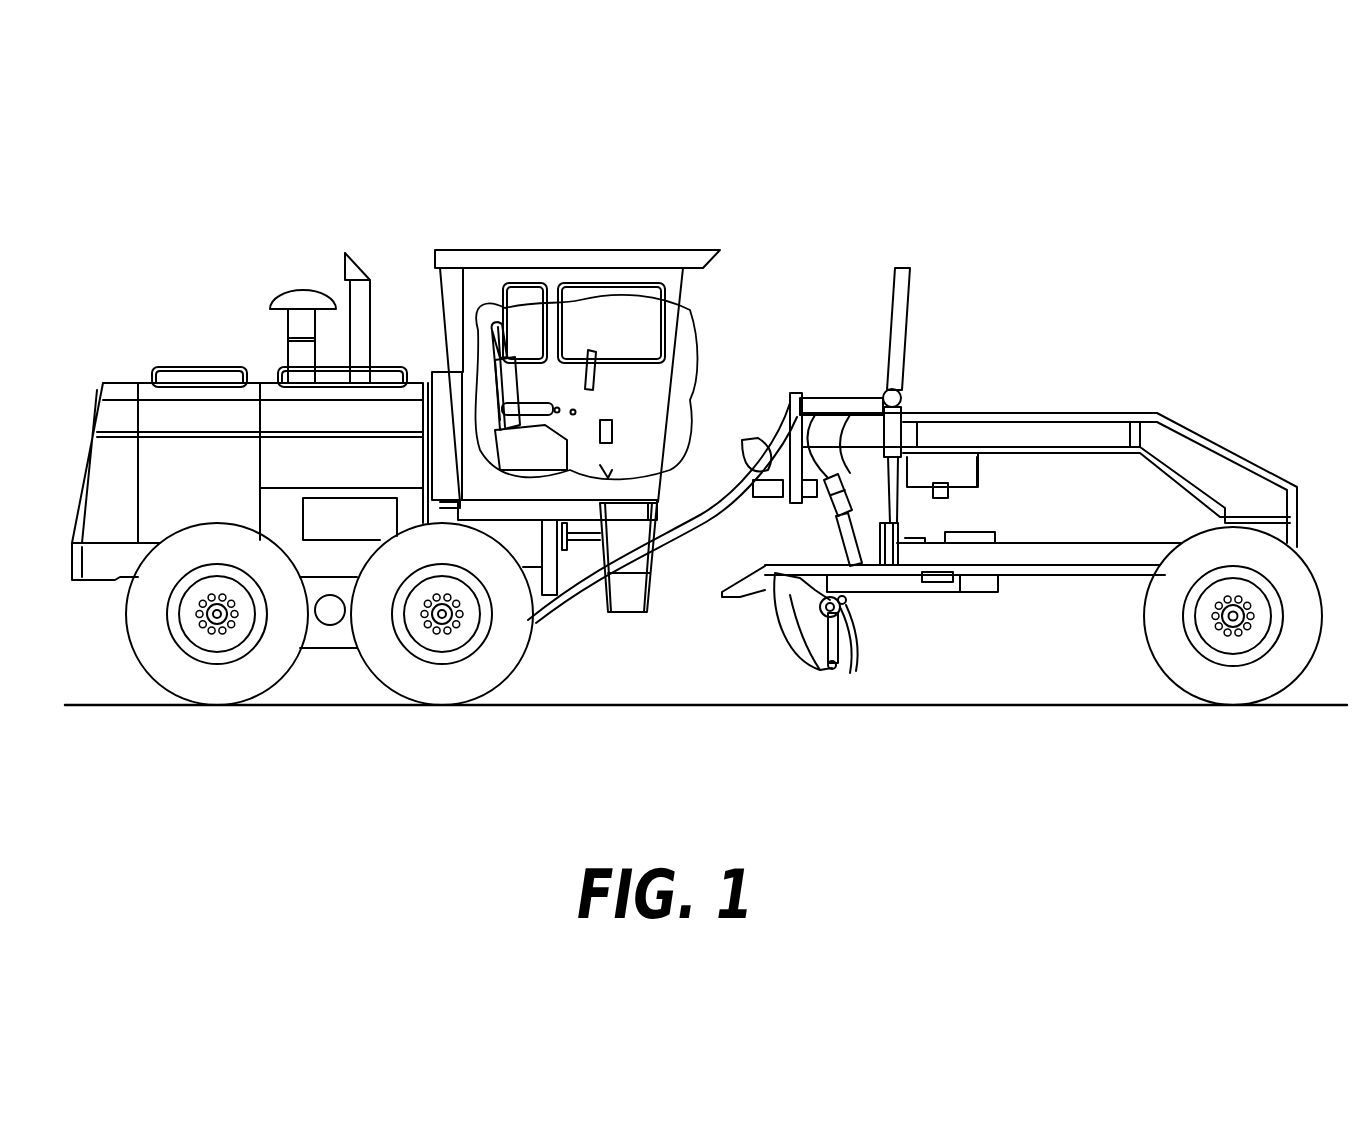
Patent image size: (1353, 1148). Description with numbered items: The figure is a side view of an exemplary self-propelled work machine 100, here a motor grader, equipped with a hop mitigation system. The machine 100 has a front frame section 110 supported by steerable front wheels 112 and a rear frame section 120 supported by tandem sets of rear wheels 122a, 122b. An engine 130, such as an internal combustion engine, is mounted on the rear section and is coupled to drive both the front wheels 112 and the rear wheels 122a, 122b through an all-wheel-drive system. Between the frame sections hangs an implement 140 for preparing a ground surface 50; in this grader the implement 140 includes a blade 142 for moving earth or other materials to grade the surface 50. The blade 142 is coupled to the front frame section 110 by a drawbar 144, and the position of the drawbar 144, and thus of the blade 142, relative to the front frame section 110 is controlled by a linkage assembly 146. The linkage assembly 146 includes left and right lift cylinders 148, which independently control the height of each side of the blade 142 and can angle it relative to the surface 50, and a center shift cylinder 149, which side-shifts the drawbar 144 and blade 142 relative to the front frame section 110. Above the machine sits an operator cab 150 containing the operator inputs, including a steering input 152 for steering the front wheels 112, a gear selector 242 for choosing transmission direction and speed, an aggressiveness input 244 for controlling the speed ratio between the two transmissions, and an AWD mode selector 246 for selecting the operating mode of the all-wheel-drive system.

The self-propelled work machine 100 is at (861, 142).
The ground surface 50 is at (673, 707).
The front frame section 110 is at (1318, 752).
The front wheels 112 is at (1195, 660).
The rear frame section 120 is at (450, 752).
The rear wheel 122a is at (410, 672).
The rear wheel 122b is at (213, 678).
The engine 130 is at (364, 477).
The implement 140 is at (988, 642).
The blade 142 is at (848, 640).
The drawbar 144 is at (1100, 545).
The linkage assembly 146 is at (952, 366).
The lift cylinder 148 is at (892, 293).
The center shift cylinder 149 is at (828, 492).
The operator cab 150 is at (590, 250).
The steering input 152 is at (588, 350).
The gear selector 242 is at (557, 410).
The aggressiveness input 244 is at (612, 416).
The AWD mode selector 246 is at (613, 427).